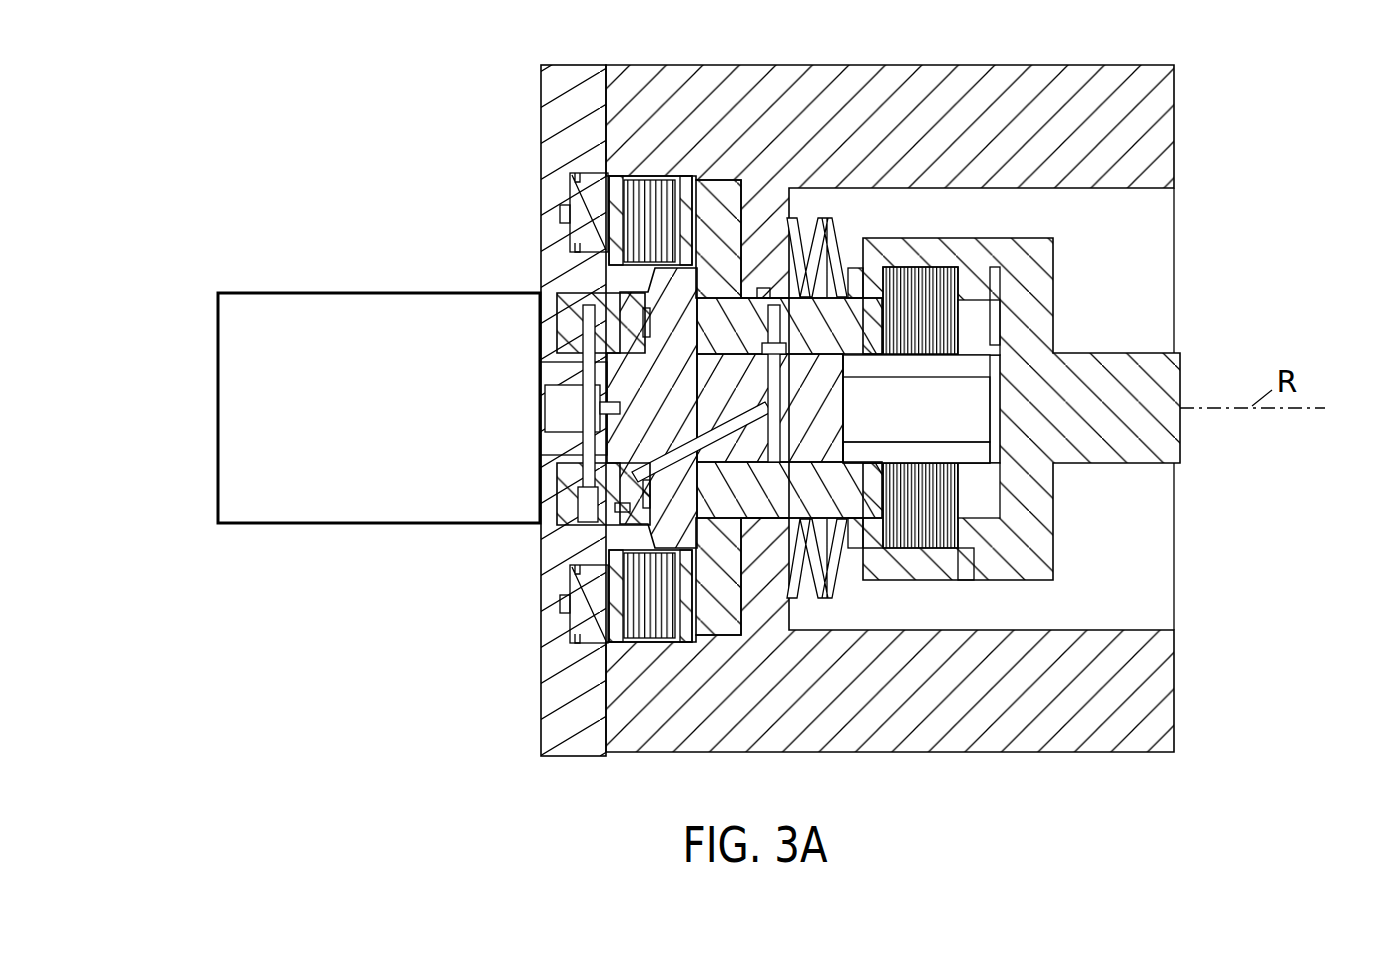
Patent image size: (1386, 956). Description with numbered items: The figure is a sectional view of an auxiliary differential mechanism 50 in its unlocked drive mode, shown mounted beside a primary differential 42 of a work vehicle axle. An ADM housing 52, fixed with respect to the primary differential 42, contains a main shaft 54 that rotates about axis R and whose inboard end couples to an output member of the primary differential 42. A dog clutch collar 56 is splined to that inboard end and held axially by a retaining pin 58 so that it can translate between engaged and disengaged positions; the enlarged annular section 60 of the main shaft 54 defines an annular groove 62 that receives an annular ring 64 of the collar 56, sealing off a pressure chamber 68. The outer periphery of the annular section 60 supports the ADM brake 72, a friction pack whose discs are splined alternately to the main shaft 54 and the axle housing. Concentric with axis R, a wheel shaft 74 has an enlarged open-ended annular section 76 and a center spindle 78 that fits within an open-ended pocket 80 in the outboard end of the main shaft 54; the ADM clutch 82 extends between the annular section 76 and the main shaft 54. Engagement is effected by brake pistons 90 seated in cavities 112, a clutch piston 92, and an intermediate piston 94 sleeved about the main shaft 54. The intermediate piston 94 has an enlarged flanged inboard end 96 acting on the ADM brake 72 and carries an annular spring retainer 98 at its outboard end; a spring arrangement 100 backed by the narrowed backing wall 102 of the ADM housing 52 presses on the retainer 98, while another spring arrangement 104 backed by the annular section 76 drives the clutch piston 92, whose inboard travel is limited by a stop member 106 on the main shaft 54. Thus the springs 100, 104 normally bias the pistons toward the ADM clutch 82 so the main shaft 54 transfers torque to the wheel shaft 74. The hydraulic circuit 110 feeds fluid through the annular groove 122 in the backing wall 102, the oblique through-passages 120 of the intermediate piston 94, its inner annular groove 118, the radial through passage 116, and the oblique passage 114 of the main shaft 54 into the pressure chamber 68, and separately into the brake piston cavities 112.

The primary differential 42 is at (218, 400).
The auxiliary differential mechanism 50 is at (934, 52).
The ADM housing 52 is at (675, 82).
The main shaft 54 is at (862, 447).
The dog clutch collar 56 is at (568, 512).
The retaining pin 58 is at (585, 310).
The enlarged annular section 60 is at (678, 522).
The annular groove 62 is at (655, 547).
The annular ring 64 is at (623, 507).
The pressure chamber 68 is at (650, 502).
The ADM brake 72 is at (655, 195).
The wheel shaft 74 is at (1143, 365).
The annular section 76 is at (962, 570).
The center spindle 78 is at (882, 421).
The open-ended pocket 80 is at (848, 428).
The ADM clutch 82 is at (927, 283).
The brake piston 90 is at (592, 195).
The clutch piston 92 is at (977, 532).
The intermediate piston 94 is at (822, 318).
The enlarged flanged inboard end 96 is at (727, 203).
The annular spring retainer 98 is at (862, 282).
The spring arrangement 100 is at (815, 228).
The backing wall 102 is at (790, 620).
The spring arrangement 104 is at (1002, 296).
The stop member 106 is at (967, 441).
The hydraulic circuit 110 is at (680, 447).
The cavities 112 is at (562, 213).
The oblique passage 114 is at (732, 423).
The radial through passage 116 is at (773, 378).
The annular groove 118 is at (766, 343).
The oblique through-passages 120 is at (777, 320).
The annular groove 122 is at (768, 288).